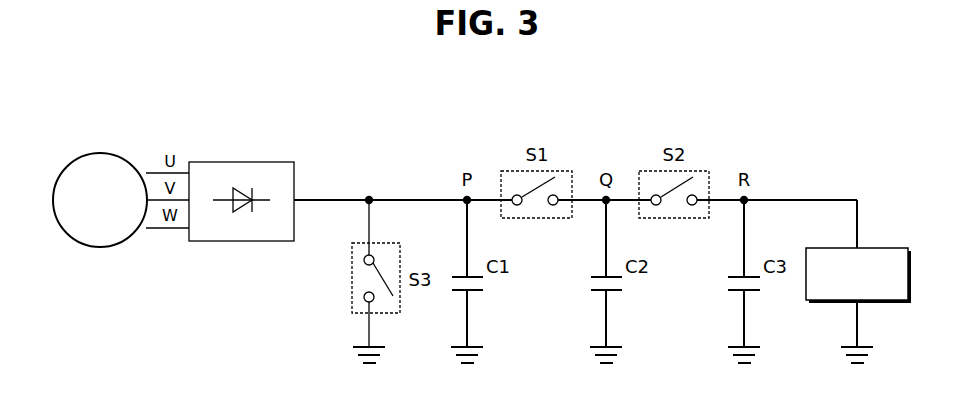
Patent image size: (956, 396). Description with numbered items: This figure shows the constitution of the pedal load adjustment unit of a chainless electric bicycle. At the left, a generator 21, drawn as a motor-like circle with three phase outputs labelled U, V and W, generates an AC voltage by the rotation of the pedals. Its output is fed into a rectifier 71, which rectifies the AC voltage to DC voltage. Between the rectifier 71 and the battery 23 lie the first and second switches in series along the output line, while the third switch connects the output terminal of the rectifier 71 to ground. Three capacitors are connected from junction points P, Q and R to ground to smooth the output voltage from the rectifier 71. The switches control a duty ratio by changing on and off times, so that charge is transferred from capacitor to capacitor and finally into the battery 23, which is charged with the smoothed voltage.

The generator 21 is at (116, 153).
The rectifier 71 is at (269, 162).
The battery 23 is at (886, 248).